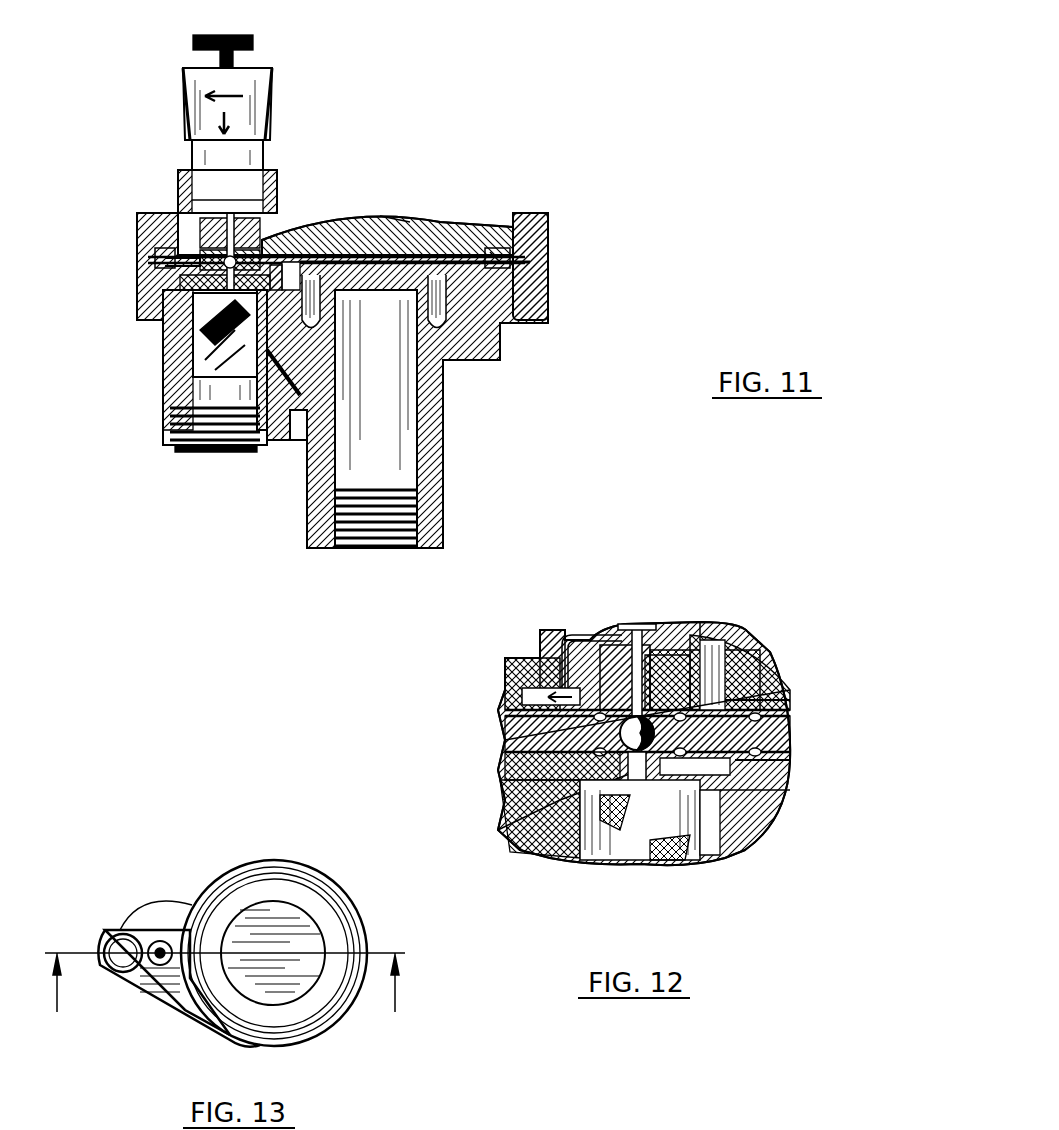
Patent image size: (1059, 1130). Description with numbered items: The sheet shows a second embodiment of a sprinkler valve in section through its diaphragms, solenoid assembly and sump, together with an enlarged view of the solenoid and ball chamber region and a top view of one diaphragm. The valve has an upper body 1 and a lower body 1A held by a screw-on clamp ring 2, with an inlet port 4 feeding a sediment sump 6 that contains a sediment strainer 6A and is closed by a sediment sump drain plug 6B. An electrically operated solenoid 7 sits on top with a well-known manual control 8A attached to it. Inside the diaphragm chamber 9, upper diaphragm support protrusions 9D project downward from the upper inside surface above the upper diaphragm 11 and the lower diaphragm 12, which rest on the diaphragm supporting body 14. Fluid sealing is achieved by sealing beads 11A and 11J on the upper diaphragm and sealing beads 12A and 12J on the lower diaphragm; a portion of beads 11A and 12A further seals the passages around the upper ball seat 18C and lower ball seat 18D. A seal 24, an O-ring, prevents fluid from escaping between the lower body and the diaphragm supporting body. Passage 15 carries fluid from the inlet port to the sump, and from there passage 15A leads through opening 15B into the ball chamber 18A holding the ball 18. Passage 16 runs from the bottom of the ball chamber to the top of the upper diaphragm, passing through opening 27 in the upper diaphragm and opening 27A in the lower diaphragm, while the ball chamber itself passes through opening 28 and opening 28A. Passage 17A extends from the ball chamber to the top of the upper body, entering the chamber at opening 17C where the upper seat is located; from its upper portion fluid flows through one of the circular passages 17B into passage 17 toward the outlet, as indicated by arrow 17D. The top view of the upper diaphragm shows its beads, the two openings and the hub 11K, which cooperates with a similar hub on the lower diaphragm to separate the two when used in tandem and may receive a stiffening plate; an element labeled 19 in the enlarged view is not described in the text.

In FIG. 11, the upper body 1 is at (495, 230).
In FIG. 11, the lower body 1A is at (500, 325).
In FIG. 11, the screw-on clamp ring 2 is at (548, 235).
In FIG. 11, the inlet port 4 is at (372, 550).
In FIG. 11, the sediment sump 6 is at (185, 395).
In FIG. 12, the sediment sump 6 is at (708, 860).
In FIG. 11, the sediment strainer 6A is at (200, 345).
In FIG. 11, the sediment sump drain plug 6B is at (240, 455).
In FIG. 11, the electrically operated solenoid 7 is at (250, 72).
In FIG. 11, the manual control 8A is at (213, 35).
In FIG. 11, the diaphragm chamber 9 is at (465, 225).
In FIG. 11, the upper diaphragm support protrusions 9D is at (410, 222).
In FIG. 11, the upper diaphragm 11 is at (420, 226).
In FIG. 12, the upper diaphragm 11 is at (770, 714).
In FIG. 13, the upper diaphragm 11 is at (255, 1015).
In FIG. 11, the sealing bead 11A is at (160, 236).
In FIG. 12, the sealing bead 11A is at (730, 662).
In FIG. 13, the sealing bead 11A is at (150, 935).
In FIG. 11, the sealing bead 11J is at (300, 238).
In FIG. 12, the sealing bead 11J is at (785, 685).
In FIG. 13, the sealing bead 11J is at (182, 1012).
In FIG. 13, the hub 11K is at (292, 1000).
In FIG. 11, the lower diaphragm 12 is at (443, 382).
In FIG. 12, the lower diaphragm 12 is at (780, 757).
In FIG. 11, the sealing bead 12A is at (162, 283).
In FIG. 12, the sealing bead 12A is at (770, 772).
In FIG. 11, the sealing bead 12J is at (290, 247).
In FIG. 12, the sealing bead 12J is at (768, 796).
In FIG. 11, the diaphragm supporting body 14 is at (545, 252).
In FIG. 12, the diaphragm supporting body 14 is at (520, 718).
In FIG. 13, the diaphragm supporting body 14 is at (221, 1003).
In FIG. 11, the passage 15 is at (303, 420).
In FIG. 12, the passage 15A is at (500, 815).
In FIG. 12, the opening 15B is at (495, 790).
In FIG. 11, the passage 16 is at (200, 310).
In FIG. 12, the passage 16 is at (770, 665).
In FIG. 12, the passage 17 is at (520, 668).
In FIG. 12, the passage 17A is at (676, 632).
In FIG. 12, the circular passage 17B is at (540, 665).
In FIG. 12, the opening 17C is at (700, 640).
In FIG. 12, the arrow 17D is at (590, 685).
In FIG. 11, the ball 18 is at (205, 236).
In FIG. 12, the ball 18 is at (618, 732).
In FIG. 11, the ball chamber 18A is at (165, 262).
In FIG. 12, the ball chamber 18A is at (510, 705).
In FIG. 11, the upper ball seat 18C is at (282, 218).
In FIG. 12, the upper ball seat 18C is at (690, 668).
In FIG. 11, the lower ball seat 18D is at (178, 298).
In FIG. 12, the lower ball seat 18D is at (680, 862).
In FIG. 12, the pin 19 is at (625, 645).
In FIG. 11, the seal 24 is at (548, 263).
In FIG. 12, the seal 24 is at (520, 752).
In FIG. 12, the opening 27 is at (785, 740).
In FIG. 13, the opening 27 is at (158, 968).
In FIG. 12, the opening 27A is at (760, 822).
In FIG. 12, the opening 28 is at (720, 648).
In FIG. 13, the opening 28 is at (118, 948).
In FIG. 12, the opening 28A is at (500, 770).